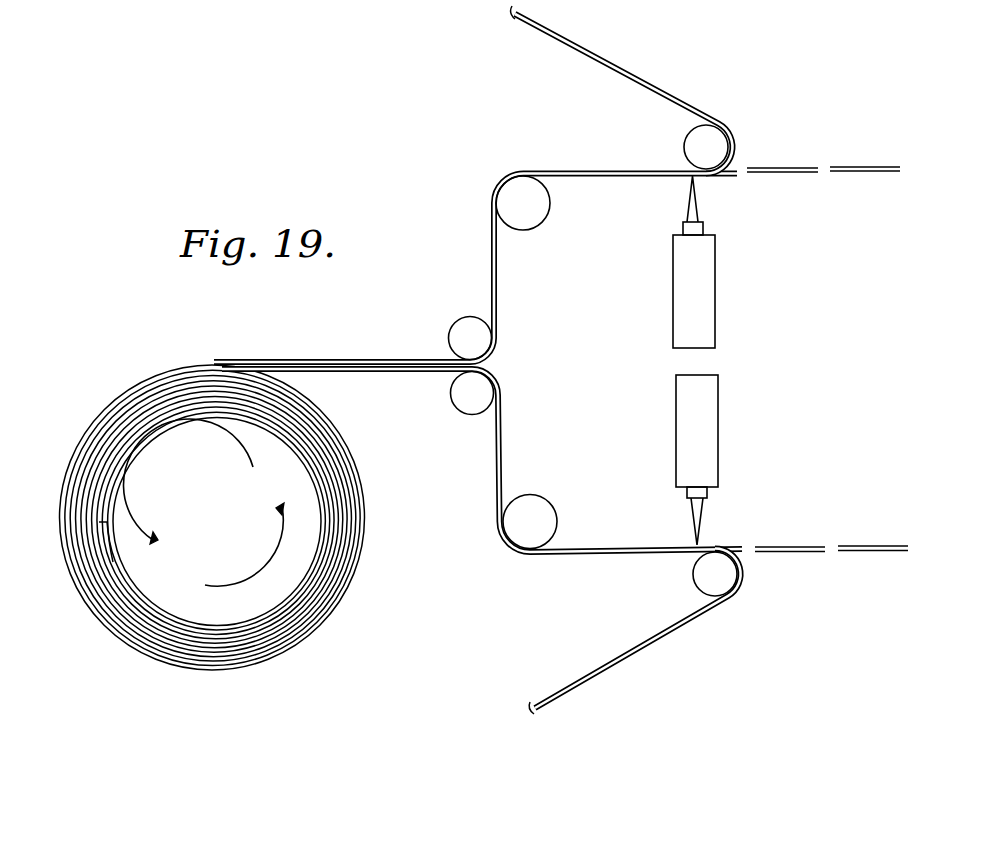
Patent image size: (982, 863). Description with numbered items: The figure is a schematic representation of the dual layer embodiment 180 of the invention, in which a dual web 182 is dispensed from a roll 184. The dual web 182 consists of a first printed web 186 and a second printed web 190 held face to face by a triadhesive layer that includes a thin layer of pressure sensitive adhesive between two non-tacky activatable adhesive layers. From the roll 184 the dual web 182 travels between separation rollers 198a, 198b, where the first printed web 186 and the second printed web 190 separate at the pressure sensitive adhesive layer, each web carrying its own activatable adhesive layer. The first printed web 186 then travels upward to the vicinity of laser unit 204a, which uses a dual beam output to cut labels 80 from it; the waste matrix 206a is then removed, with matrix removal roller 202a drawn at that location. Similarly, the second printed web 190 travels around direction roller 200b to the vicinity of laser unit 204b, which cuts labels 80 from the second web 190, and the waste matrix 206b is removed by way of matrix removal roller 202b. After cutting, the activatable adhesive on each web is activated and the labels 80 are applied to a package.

The labels 80 is at (758, 163).
The dual layer embodiment 180 is at (488, 170).
The dual web 182 is at (367, 360).
The roll 184 is at (333, 594).
The first printed web 186 is at (570, 172).
The second printed web 190 is at (572, 556).
The separation roller 198a is at (463, 337).
The separation roller 198b is at (472, 399).
The direction roller 200b is at (537, 522).
The matrix removal roller 202a is at (703, 147).
The matrix removal roller 202b is at (710, 578).
The laser unit 204a is at (700, 298).
The laser unit 204b is at (700, 427).
The waste matrix 206a is at (567, 43).
The waste matrix 206b is at (634, 631).